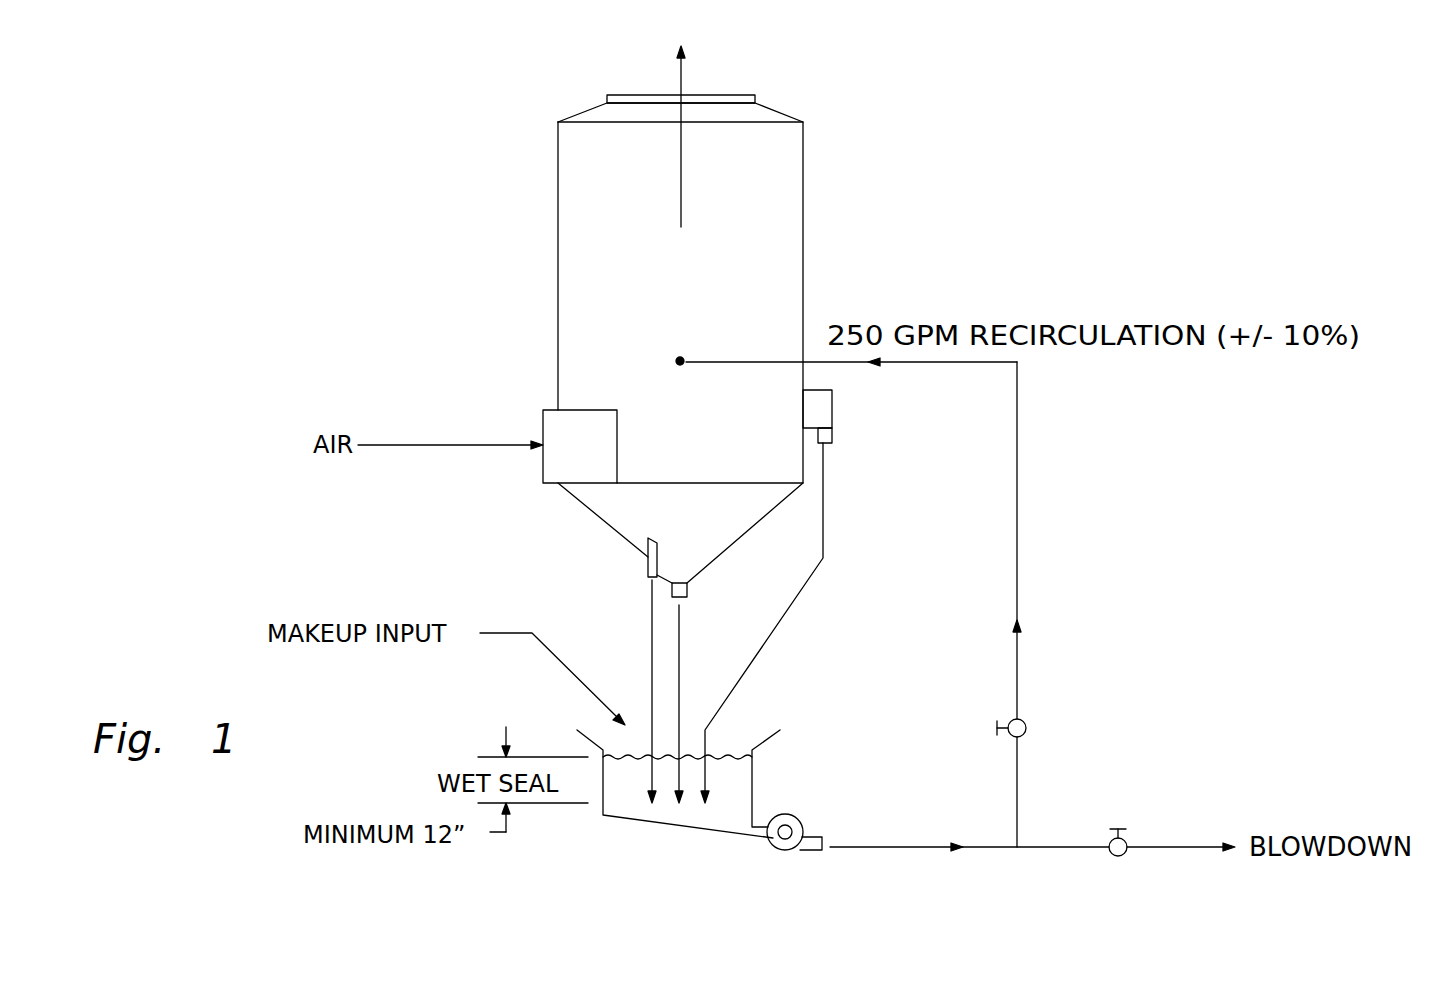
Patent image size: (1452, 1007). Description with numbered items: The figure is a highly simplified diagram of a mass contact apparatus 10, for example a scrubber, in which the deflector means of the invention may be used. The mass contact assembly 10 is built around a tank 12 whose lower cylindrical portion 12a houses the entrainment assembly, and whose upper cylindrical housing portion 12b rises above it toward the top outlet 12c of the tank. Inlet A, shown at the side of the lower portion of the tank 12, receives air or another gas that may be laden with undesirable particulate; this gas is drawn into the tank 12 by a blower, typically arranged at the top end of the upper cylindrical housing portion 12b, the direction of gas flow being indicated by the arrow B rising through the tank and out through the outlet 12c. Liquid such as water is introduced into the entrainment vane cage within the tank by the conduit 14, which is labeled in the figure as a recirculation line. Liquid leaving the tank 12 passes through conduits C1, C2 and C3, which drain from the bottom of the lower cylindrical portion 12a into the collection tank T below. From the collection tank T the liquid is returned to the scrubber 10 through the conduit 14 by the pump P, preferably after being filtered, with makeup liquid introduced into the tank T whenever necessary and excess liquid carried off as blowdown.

The mass contact apparatus 10 is at (410, 237).
The tank 12 is at (629, 314).
The lower cylindrical portion 12a is at (557, 390).
The upper cylindrical housing portion 12b is at (558, 155).
The top outlet of tank 12c is at (636, 95).
The conduit 14 is at (1015, 558).
The inlet A is at (580, 446).
The arrow B is at (680, 259).
The conduit C1 is at (648, 568).
The conduit C2 is at (689, 590).
The conduit C3 is at (834, 436).
The collection tank T is at (776, 771).
The pump P is at (803, 820).